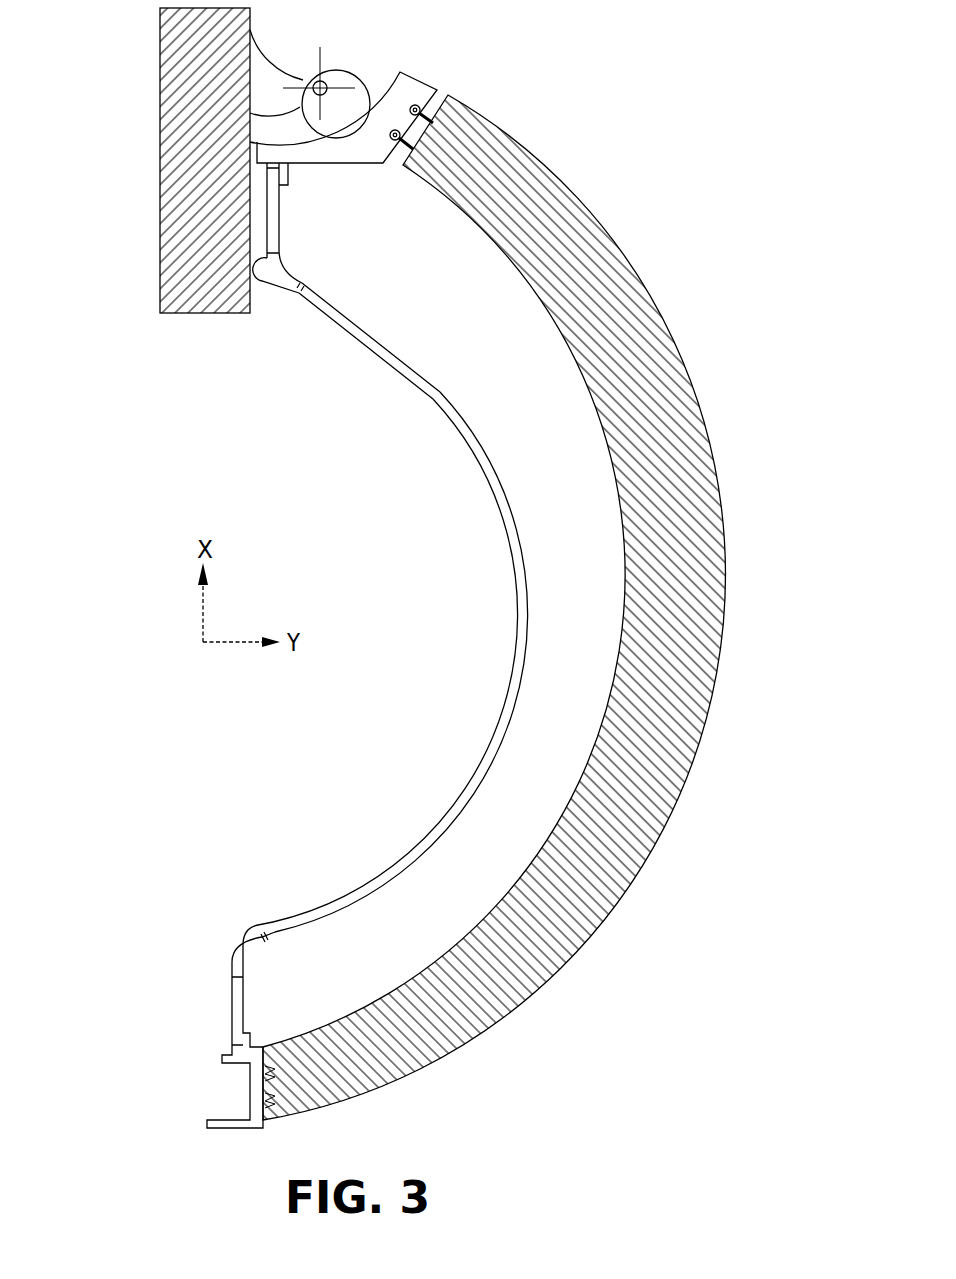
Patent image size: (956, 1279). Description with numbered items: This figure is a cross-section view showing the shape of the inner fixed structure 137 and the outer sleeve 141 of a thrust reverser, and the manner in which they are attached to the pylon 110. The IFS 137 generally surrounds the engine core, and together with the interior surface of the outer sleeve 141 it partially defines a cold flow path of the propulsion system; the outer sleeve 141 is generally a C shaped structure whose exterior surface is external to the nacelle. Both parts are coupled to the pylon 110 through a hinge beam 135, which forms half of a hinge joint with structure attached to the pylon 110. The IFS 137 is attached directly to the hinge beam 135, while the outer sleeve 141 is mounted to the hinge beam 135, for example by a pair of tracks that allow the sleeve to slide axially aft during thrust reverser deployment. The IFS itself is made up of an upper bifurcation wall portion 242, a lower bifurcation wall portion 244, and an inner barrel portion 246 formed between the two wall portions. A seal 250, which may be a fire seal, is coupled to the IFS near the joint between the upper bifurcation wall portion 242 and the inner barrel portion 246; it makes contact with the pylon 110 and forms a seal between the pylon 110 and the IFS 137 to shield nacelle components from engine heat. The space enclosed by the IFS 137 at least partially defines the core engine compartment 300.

The pylon 110 is at (175, 260).
The hinge beam 135 is at (278, 157).
The inner fixed structure (IFS) 137 is at (525, 566).
The outer sleeve 141 is at (670, 530).
The upper bifurcation wall portion 242 is at (273, 217).
The lower bifurcation wall portion 244 is at (233, 1002).
The inner barrel portion 246 is at (432, 370).
The seal 250 is at (266, 285).
The core engine compartment 300 is at (312, 738).